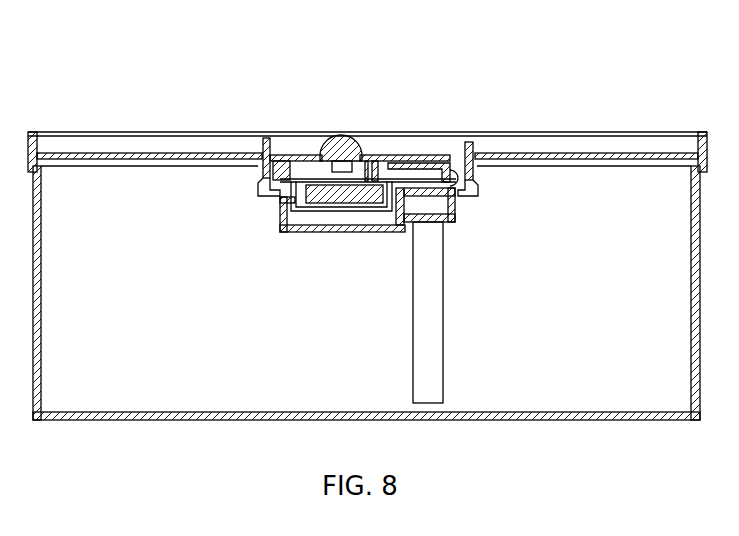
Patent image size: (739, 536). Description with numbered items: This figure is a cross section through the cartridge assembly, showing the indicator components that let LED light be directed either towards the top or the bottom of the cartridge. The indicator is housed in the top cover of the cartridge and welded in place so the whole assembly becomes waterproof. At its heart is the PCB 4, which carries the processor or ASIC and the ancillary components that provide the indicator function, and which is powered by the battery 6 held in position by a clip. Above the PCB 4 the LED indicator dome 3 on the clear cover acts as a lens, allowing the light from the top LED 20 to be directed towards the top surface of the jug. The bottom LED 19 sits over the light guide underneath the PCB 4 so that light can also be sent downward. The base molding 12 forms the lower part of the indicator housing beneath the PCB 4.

The LED indicator dome 3 is at (341, 136).
The PCB 4 is at (370, 160).
The battery 6 is at (282, 157).
The base molding 12 is at (268, 218).
The bottom LED 19 is at (450, 157).
The top LED 20 is at (323, 156).